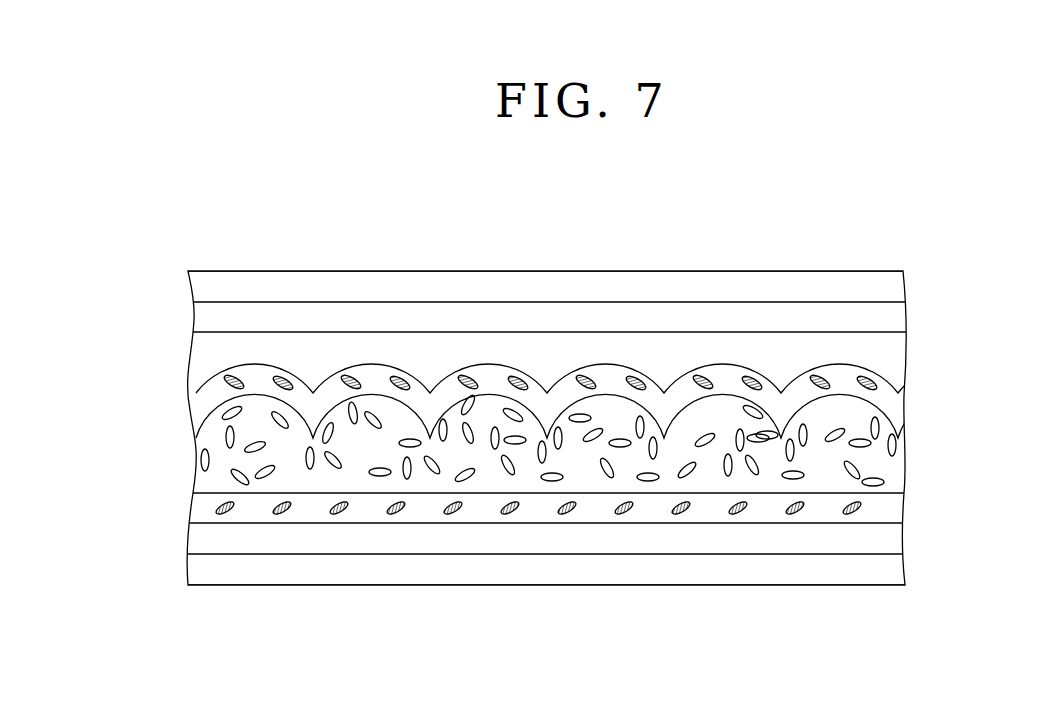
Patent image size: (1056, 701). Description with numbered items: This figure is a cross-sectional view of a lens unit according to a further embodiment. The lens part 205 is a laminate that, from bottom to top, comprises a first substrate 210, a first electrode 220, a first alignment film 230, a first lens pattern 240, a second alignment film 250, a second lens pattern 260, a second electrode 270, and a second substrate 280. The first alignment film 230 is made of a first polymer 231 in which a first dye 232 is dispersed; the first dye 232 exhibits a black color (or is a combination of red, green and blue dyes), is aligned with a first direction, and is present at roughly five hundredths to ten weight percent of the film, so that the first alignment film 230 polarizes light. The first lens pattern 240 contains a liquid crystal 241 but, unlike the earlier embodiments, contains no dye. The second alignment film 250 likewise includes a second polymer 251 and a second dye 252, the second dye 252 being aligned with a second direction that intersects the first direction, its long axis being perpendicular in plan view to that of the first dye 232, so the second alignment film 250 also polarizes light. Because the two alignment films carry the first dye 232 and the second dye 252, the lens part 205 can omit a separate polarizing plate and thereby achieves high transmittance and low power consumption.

The lens part 205 is at (952, 191).
The first substrate 210 is at (893, 572).
The first electrode 220 is at (892, 542).
The first alignment film 230 is at (616, 512).
The first polymer 231 is at (893, 507).
The first dye 232 is at (855, 512).
The first lens pattern 240 is at (548, 443).
The liquid crystal 241 is at (199, 458).
The second alignment film 250 is at (624, 401).
The second polymer 251 is at (893, 410).
The second dye 252 is at (872, 381).
The second lens pattern 260 is at (893, 348).
The second electrode 270 is at (893, 315).
The second substrate 280 is at (893, 284).